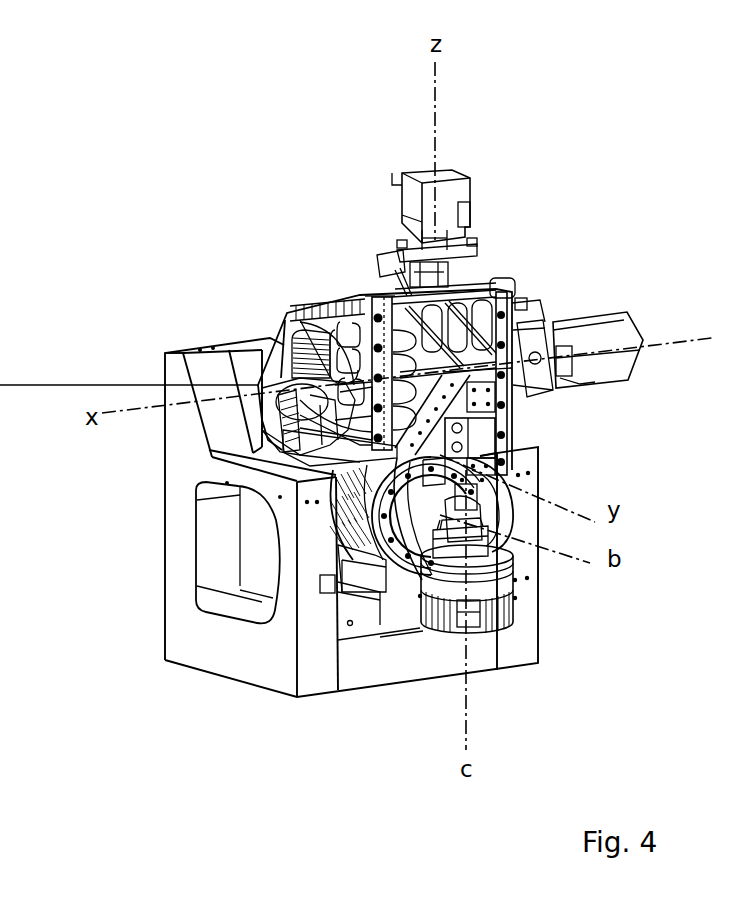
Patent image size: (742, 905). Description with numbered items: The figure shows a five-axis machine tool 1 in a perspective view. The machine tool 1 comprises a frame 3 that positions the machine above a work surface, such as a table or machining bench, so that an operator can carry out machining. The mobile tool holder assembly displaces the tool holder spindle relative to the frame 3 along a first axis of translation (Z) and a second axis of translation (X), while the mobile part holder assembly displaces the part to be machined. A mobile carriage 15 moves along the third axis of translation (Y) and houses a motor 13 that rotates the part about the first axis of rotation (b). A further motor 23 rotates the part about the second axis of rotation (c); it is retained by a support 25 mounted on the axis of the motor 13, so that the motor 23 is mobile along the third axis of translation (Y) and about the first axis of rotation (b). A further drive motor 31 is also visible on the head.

The machine tool 1 is at (205, 730).
The frame 3 is at (278, 362).
The motor 13 is at (340, 506).
The mobile carriage 15 is at (338, 540).
The motor 23 is at (515, 612).
The support 25 is at (513, 562).
The x-axis drive motor 31 is at (600, 333).